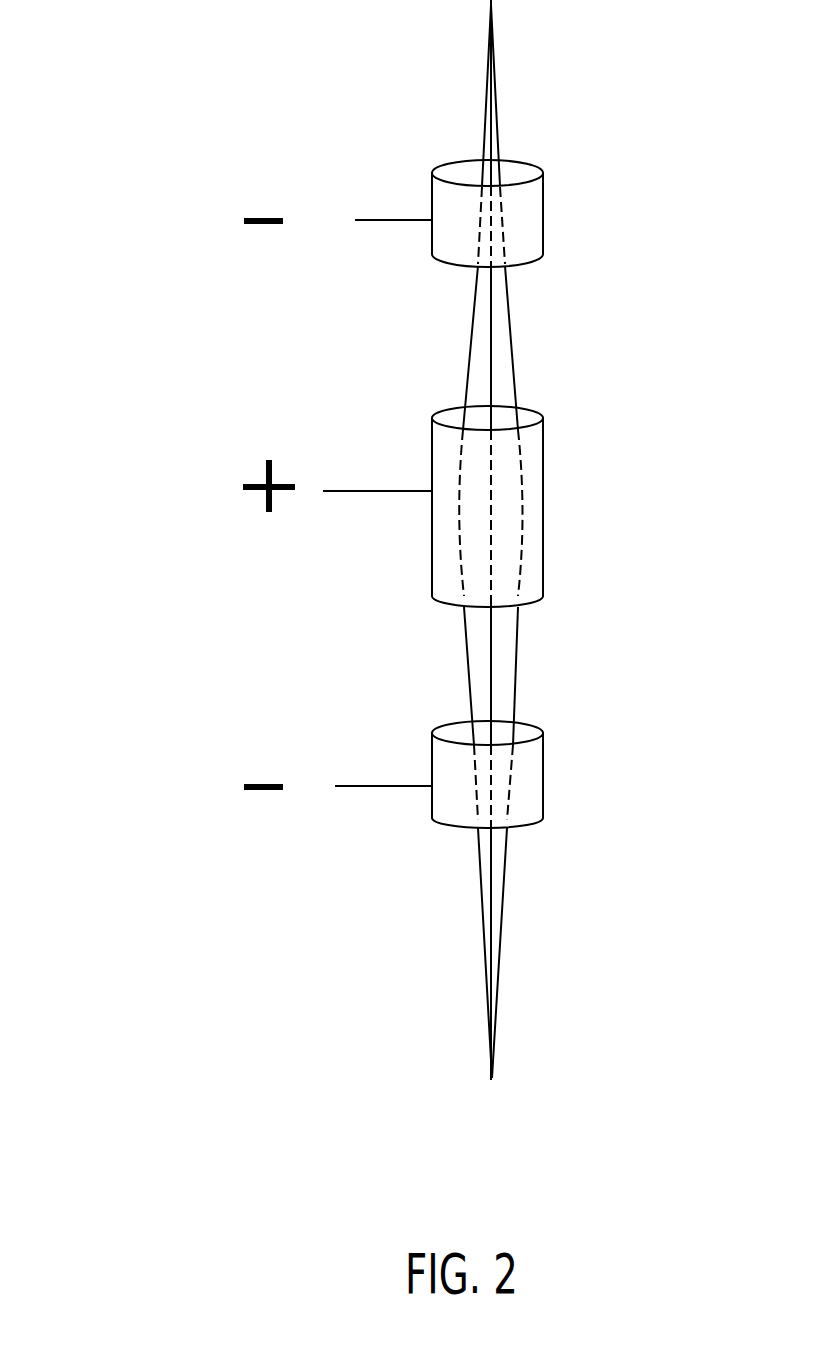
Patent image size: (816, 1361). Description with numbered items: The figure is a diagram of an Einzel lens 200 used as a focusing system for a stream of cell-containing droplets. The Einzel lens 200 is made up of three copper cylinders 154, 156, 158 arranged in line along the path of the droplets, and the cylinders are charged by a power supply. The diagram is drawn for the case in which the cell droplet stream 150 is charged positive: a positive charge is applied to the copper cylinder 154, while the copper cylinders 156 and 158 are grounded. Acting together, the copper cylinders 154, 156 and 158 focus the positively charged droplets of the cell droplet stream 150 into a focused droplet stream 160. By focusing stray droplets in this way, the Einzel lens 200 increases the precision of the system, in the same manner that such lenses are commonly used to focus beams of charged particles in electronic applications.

The cell droplet stream 150 is at (512, 123).
The copper cylinder 154 is at (532, 578).
The copper cylinder 156 is at (530, 803).
The copper cylinder 158 is at (530, 228).
The focused droplet stream 160 is at (502, 1014).
The Einzel lens 200 is at (219, 345).